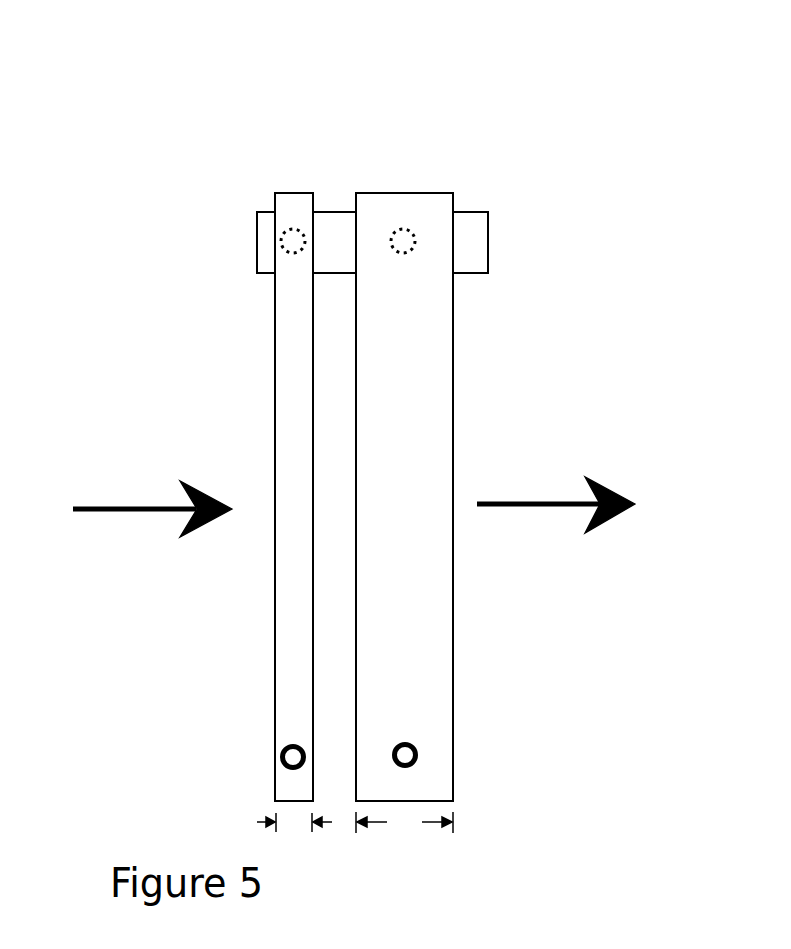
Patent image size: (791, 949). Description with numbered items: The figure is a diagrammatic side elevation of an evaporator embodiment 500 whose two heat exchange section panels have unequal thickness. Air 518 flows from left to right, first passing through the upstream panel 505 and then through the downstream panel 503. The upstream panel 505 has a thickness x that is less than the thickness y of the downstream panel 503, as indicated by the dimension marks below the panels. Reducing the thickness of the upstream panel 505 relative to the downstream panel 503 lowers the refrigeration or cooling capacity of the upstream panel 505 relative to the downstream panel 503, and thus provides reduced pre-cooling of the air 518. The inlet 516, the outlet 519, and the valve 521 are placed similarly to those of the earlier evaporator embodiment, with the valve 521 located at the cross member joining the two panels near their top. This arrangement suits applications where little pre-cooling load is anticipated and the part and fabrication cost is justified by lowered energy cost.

The evaporator embodiment 500 is at (345, 427).
The downstream panel 503 is at (455, 358).
The upstream panel 505 is at (275, 358).
The inlet 516 is at (418, 757).
The air 518 is at (127, 512).
The outlet 519 is at (280, 752).
The valve 521 is at (342, 222).